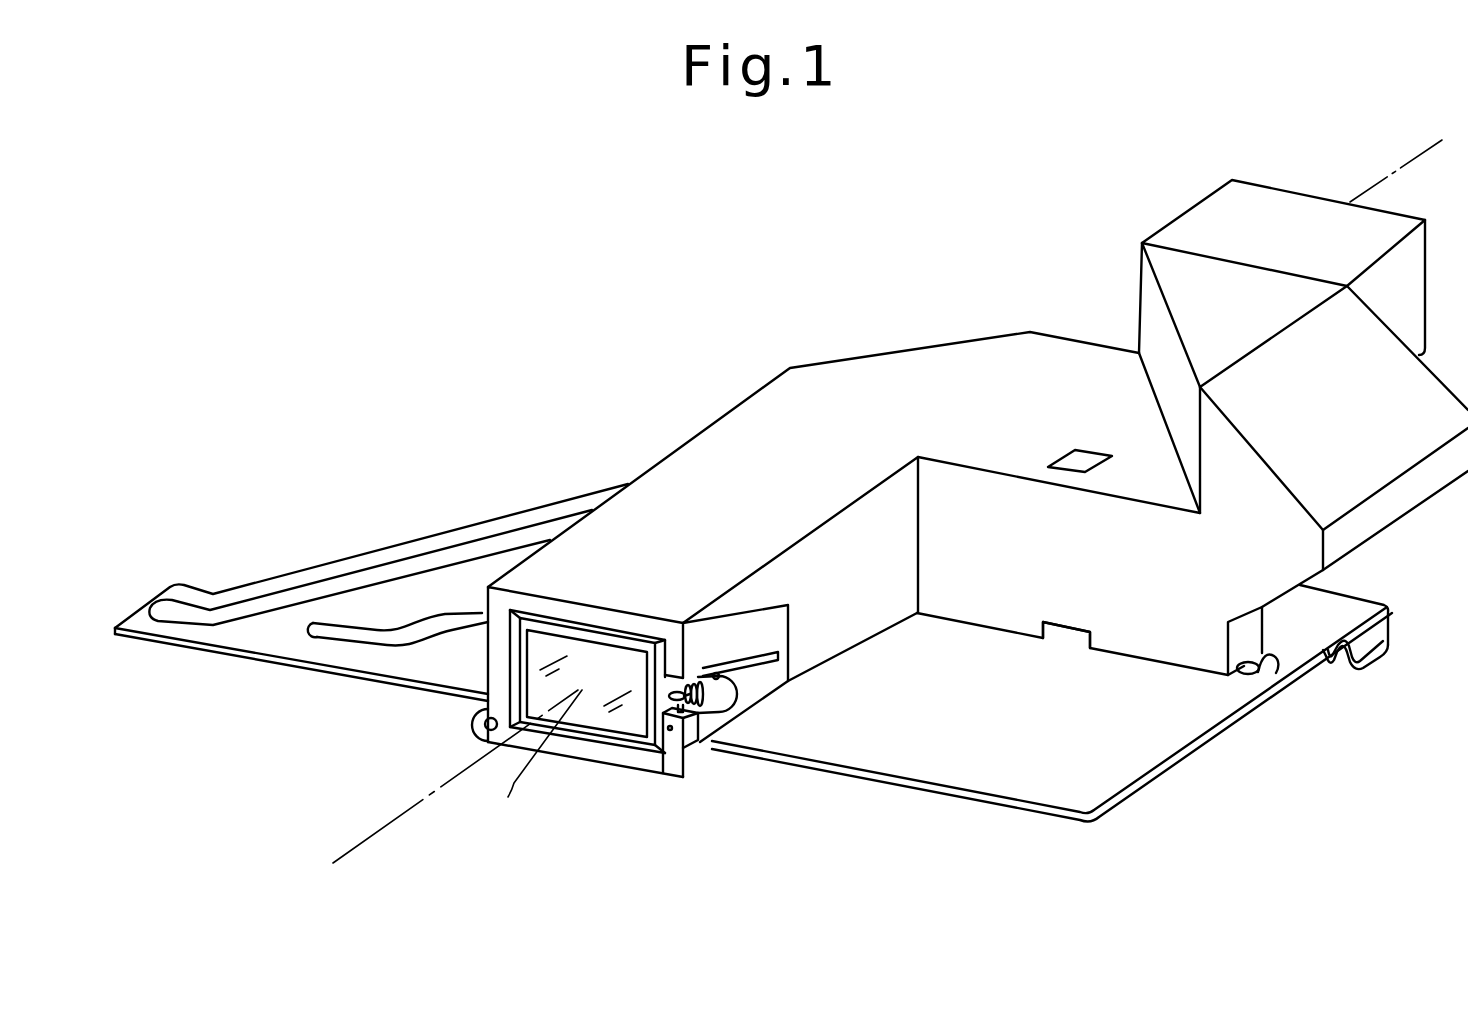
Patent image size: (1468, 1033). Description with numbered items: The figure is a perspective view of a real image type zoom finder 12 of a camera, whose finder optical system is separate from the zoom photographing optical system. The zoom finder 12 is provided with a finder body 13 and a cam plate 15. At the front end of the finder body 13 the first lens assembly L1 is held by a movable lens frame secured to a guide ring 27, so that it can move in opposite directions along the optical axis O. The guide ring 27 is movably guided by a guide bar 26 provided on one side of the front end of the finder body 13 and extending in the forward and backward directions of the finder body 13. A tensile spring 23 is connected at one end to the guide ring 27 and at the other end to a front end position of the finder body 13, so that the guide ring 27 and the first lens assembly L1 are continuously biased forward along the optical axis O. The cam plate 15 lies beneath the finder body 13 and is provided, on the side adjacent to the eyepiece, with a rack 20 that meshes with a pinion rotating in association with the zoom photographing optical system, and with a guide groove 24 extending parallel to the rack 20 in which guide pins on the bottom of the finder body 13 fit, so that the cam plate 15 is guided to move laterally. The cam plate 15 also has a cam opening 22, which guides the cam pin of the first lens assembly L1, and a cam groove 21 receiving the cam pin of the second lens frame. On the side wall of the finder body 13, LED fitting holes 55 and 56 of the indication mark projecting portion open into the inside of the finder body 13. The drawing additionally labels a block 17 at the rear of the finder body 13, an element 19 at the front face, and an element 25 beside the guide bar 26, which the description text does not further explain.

The real image type zoom finder 12 is at (1047, 218).
The finder body 13 is at (983, 333).
The cam plate 15 is at (1150, 752).
The prism 17 is at (1334, 200).
The display screen 19 is at (602, 730).
The rack 20 is at (1327, 660).
The cam groove 21 is at (362, 583).
The cam opening 22 is at (393, 633).
The tensile spring 23 is at (700, 655).
The guide groove 24 is at (1277, 660).
The rod 25 is at (758, 642).
The guide bar 26 is at (766, 682).
The guide ring 27 is at (718, 710).
The LED fitting hole 55 is at (1085, 448).
The LED fitting hole 56 is at (1067, 638).
The first lens assembly L1 is at (530, 762).
The optical axis O is at (422, 803).